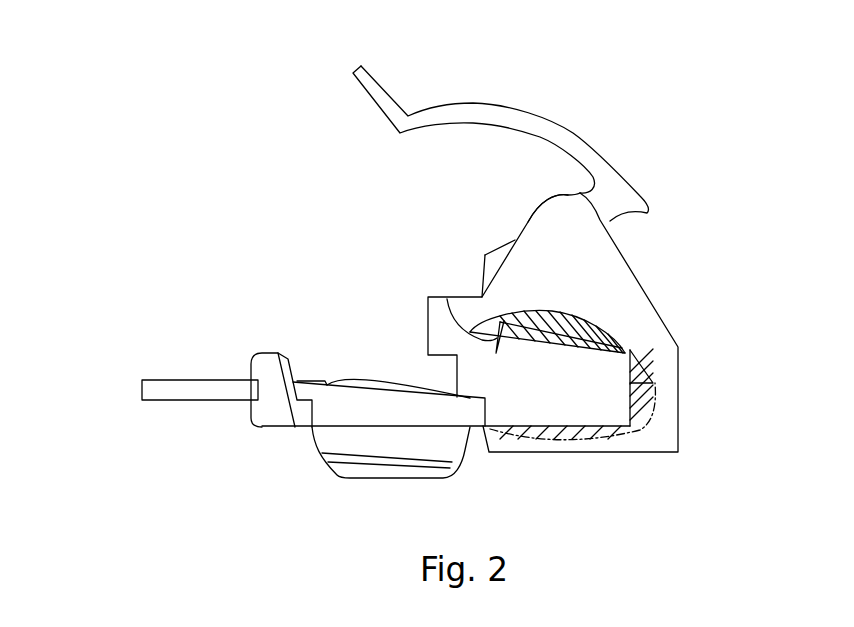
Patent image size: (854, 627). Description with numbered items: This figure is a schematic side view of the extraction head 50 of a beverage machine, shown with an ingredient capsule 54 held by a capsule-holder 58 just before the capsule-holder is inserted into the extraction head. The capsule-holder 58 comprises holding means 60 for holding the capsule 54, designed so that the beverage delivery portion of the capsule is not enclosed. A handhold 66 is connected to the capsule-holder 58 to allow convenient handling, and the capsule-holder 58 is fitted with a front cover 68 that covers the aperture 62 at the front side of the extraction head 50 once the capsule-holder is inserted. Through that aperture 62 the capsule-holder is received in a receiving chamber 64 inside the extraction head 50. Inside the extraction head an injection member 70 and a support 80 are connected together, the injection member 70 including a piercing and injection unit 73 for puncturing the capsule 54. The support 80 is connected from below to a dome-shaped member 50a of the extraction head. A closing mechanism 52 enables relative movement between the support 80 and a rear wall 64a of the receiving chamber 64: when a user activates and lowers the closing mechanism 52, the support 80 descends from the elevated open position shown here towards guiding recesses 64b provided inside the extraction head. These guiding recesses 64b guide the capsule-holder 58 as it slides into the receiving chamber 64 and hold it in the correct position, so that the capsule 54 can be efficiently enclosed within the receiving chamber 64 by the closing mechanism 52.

The extraction head 50 is at (646, 292).
The dome-shaped member 50a is at (540, 230).
The closing mechanism 52 is at (514, 103).
The ingredient capsule 54 is at (358, 380).
The capsule-holder 58 is at (333, 418).
The holding means 60 is at (452, 450).
The aperture 62 is at (456, 384).
The receiving chamber 64 is at (557, 405).
The rear wall 64a is at (650, 392).
The guiding recesses 64b is at (573, 428).
The handhold 66 is at (203, 392).
The front cover 68 is at (256, 364).
The injection member 70 is at (644, 337).
The piercing and injection unit 73 is at (447, 299).
The support 80 is at (624, 325).